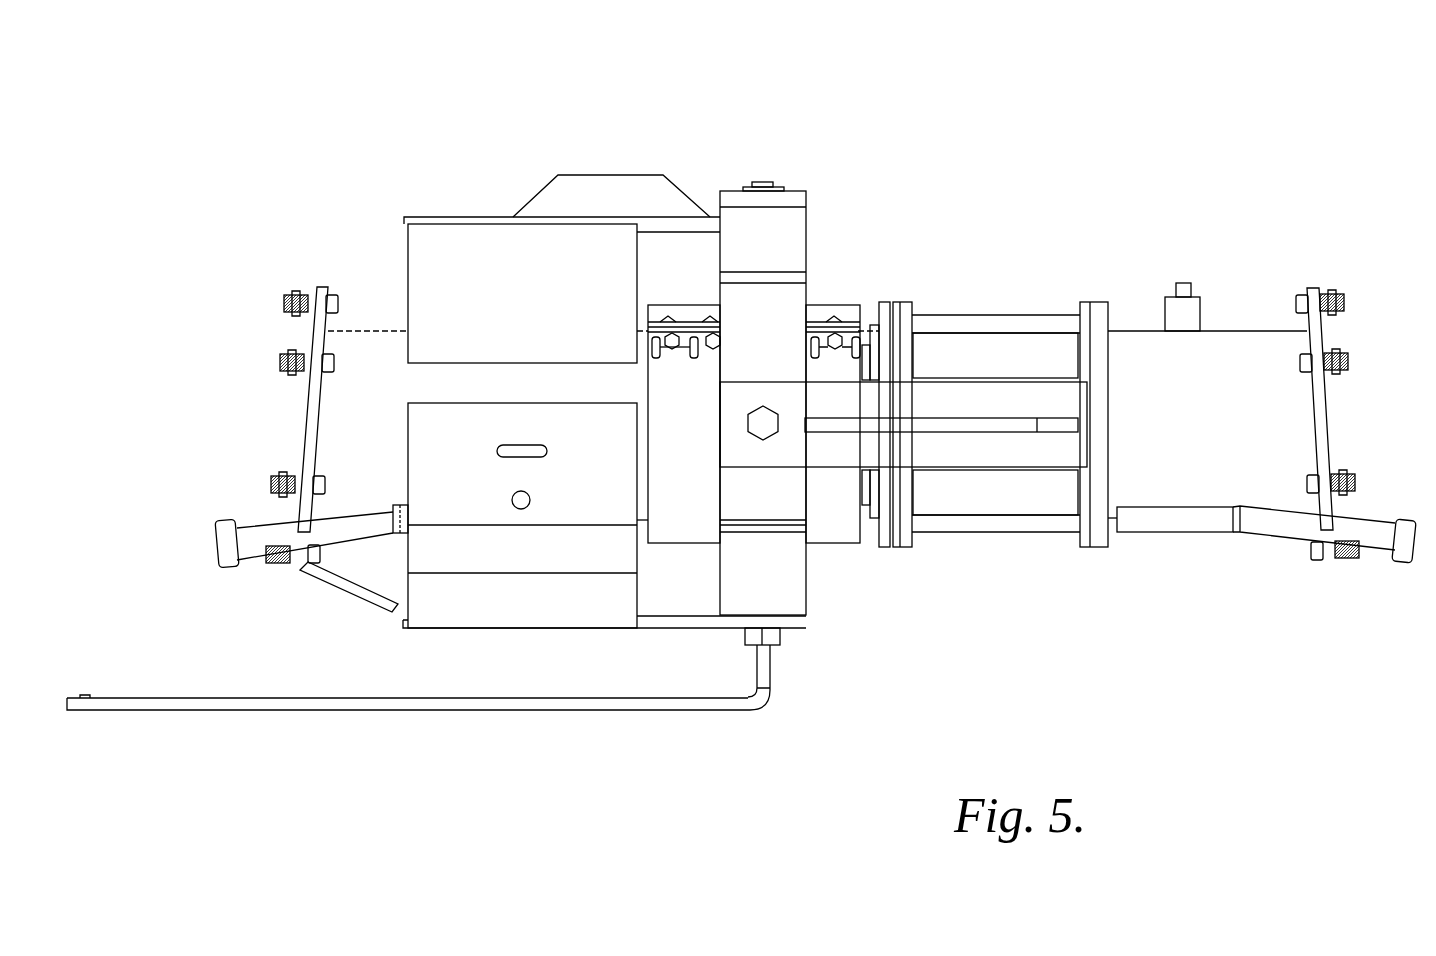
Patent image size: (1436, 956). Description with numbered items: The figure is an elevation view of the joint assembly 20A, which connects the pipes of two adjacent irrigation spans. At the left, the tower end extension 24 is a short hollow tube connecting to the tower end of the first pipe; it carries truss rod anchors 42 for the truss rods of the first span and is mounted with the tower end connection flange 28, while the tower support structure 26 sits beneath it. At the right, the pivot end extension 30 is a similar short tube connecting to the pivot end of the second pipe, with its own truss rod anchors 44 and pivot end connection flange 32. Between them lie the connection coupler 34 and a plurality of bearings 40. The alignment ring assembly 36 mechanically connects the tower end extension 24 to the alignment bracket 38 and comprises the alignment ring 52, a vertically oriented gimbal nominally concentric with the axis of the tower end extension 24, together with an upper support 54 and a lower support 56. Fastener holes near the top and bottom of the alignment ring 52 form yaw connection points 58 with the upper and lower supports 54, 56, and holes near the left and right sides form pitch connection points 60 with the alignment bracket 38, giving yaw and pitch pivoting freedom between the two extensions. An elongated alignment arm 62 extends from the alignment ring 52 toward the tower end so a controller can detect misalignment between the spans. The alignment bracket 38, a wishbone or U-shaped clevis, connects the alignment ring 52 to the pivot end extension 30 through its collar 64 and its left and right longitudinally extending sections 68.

The joint assembly 20A is at (607, 105).
The tower end extension 24 is at (381, 345).
The tower support structure 26 is at (478, 605).
The tower end connection flange 28 is at (310, 418).
The pivot end extension 30 is at (1237, 347).
The pivot end connection flange 32 is at (1318, 412).
The connection coupler 34 is at (846, 296).
The alignment ring assembly 36 is at (681, 157).
The alignment bracket 38 is at (966, 440).
The bearings 40 is at (906, 290).
The truss rod anchors 42 is at (203, 548).
The truss rod anchors 44 is at (1411, 577).
The alignment ring 52 is at (818, 210).
The upper support 54 is at (526, 188).
The lower support 56 is at (667, 632).
The yaw connection points 58 is at (772, 165).
The pitch connection points 60 is at (748, 442).
The alignment arm 62 is at (265, 703).
The collar 64 is at (1052, 500).
The longitudinally extending sections 68 is at (925, 457).